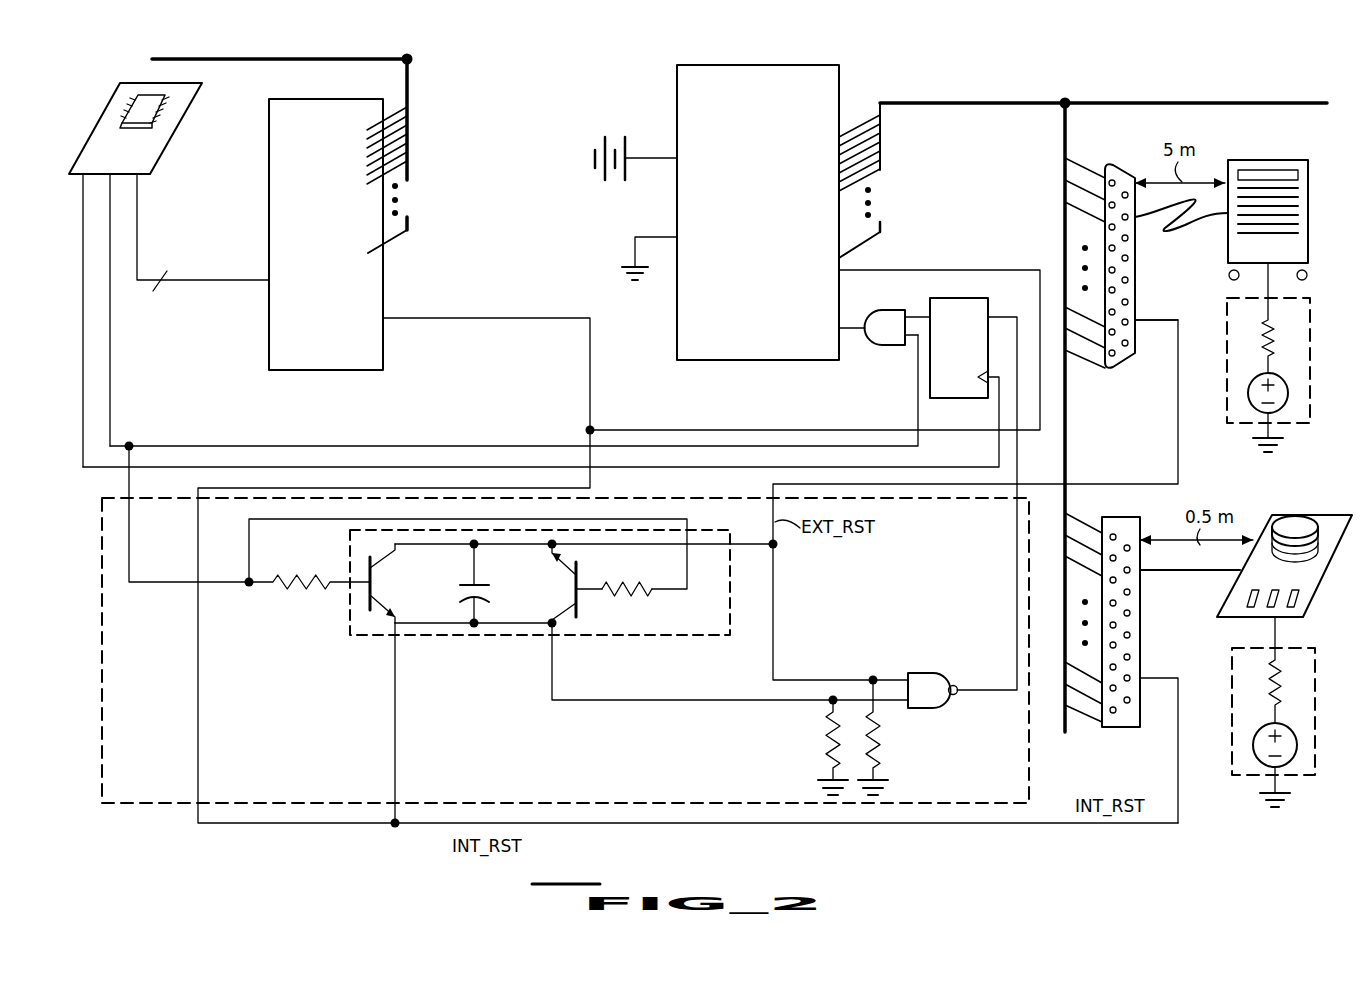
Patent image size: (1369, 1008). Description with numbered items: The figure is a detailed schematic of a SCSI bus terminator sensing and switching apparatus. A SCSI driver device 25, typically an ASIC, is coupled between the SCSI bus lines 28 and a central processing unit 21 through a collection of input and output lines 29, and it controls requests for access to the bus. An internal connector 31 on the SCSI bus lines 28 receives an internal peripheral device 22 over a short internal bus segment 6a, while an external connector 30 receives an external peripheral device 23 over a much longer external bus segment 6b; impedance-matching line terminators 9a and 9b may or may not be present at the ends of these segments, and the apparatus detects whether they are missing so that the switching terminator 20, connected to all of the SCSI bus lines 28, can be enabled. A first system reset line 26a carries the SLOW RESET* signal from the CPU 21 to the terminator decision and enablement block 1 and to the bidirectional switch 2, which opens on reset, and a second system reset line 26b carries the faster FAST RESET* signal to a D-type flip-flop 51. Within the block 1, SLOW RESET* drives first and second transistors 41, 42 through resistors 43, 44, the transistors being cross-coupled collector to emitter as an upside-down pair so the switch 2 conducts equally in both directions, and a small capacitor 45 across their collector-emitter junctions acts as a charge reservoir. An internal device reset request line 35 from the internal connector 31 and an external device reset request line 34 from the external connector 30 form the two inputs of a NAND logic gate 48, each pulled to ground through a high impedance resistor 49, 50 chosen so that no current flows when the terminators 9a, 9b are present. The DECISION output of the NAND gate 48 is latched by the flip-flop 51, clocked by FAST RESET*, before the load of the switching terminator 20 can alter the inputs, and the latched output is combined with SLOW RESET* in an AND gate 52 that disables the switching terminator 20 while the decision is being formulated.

The terminator decision and enablement block 1 is at (128, 810).
The bidirectional switch 2 is at (372, 644).
The switching terminator 20 is at (810, 65).
The central processing unit 21 is at (160, 160).
The internal peripheral device 22 is at (1310, 515).
The external peripheral device 23 is at (1263, 160).
The SCSI driver device 25 is at (335, 99).
The first system reset line 26a is at (110, 401).
The second system reset line 26b is at (83, 431).
The SCSI bus lines 28 is at (410, 92).
The input and output lines 29 is at (200, 280).
The external connector 30 is at (1118, 165).
The internal connector 31 is at (1140, 517).
The external device reset request line 34 is at (1163, 320).
The internal device reset request line 35 is at (1163, 678).
The first transistor 41 is at (393, 582).
The second transistor 42 is at (563, 590).
The resistor 43 is at (303, 597).
The resistor 44 is at (632, 600).
The capacitor 45 is at (458, 589).
The NAND logic gate 48 is at (930, 672).
The high impedance resistor 49 is at (825, 743).
The high impedance resistor 50 is at (880, 743).
The flip-flop 51 is at (970, 366).
The AND gate 52 is at (883, 346).
The internal bus segment 6a is at (1163, 575).
The external bus segment 6b is at (1173, 228).
The line terminator 9a is at (1315, 700).
The line terminator 9b is at (1310, 352).